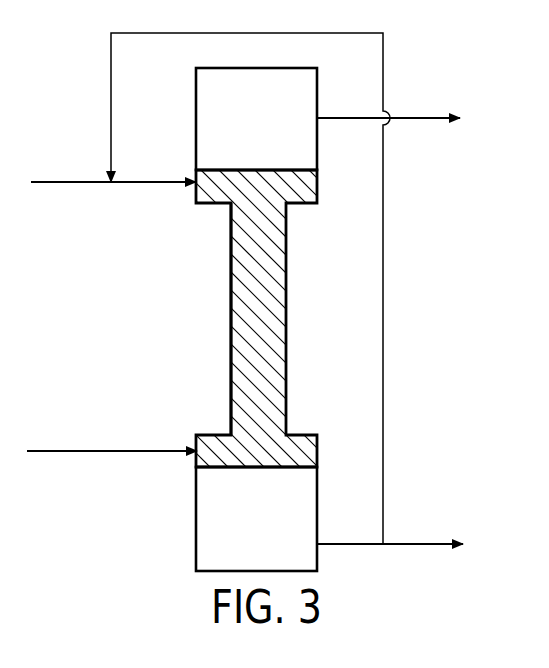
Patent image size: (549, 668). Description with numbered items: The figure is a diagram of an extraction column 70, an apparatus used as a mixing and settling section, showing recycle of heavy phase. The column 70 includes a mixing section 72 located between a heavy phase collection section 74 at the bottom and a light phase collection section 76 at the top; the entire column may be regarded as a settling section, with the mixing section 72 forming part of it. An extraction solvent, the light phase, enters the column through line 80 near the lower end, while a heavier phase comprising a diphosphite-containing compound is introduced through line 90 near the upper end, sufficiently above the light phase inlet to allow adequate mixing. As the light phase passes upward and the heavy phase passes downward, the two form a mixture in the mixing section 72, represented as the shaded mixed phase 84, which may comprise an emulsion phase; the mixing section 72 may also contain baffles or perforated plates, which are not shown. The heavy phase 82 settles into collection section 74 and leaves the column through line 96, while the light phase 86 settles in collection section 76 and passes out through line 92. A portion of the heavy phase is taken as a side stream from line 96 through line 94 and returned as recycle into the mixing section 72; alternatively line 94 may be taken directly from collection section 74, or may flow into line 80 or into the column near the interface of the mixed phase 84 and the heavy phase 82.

The extraction column 70 is at (257, 320).
The mixing section 72 is at (229, 342).
The heavy phase collection section 74 is at (196, 516).
The light phase collection section 76 is at (196, 119).
The line 80 is at (122, 450).
The heavy phase 82 is at (298, 510).
The mixed phase 84 is at (275, 307).
The light phase 86 is at (303, 153).
The line 90 is at (70, 184).
The line 92 is at (426, 121).
The line 94 is at (384, 68).
The line 96 is at (412, 542).